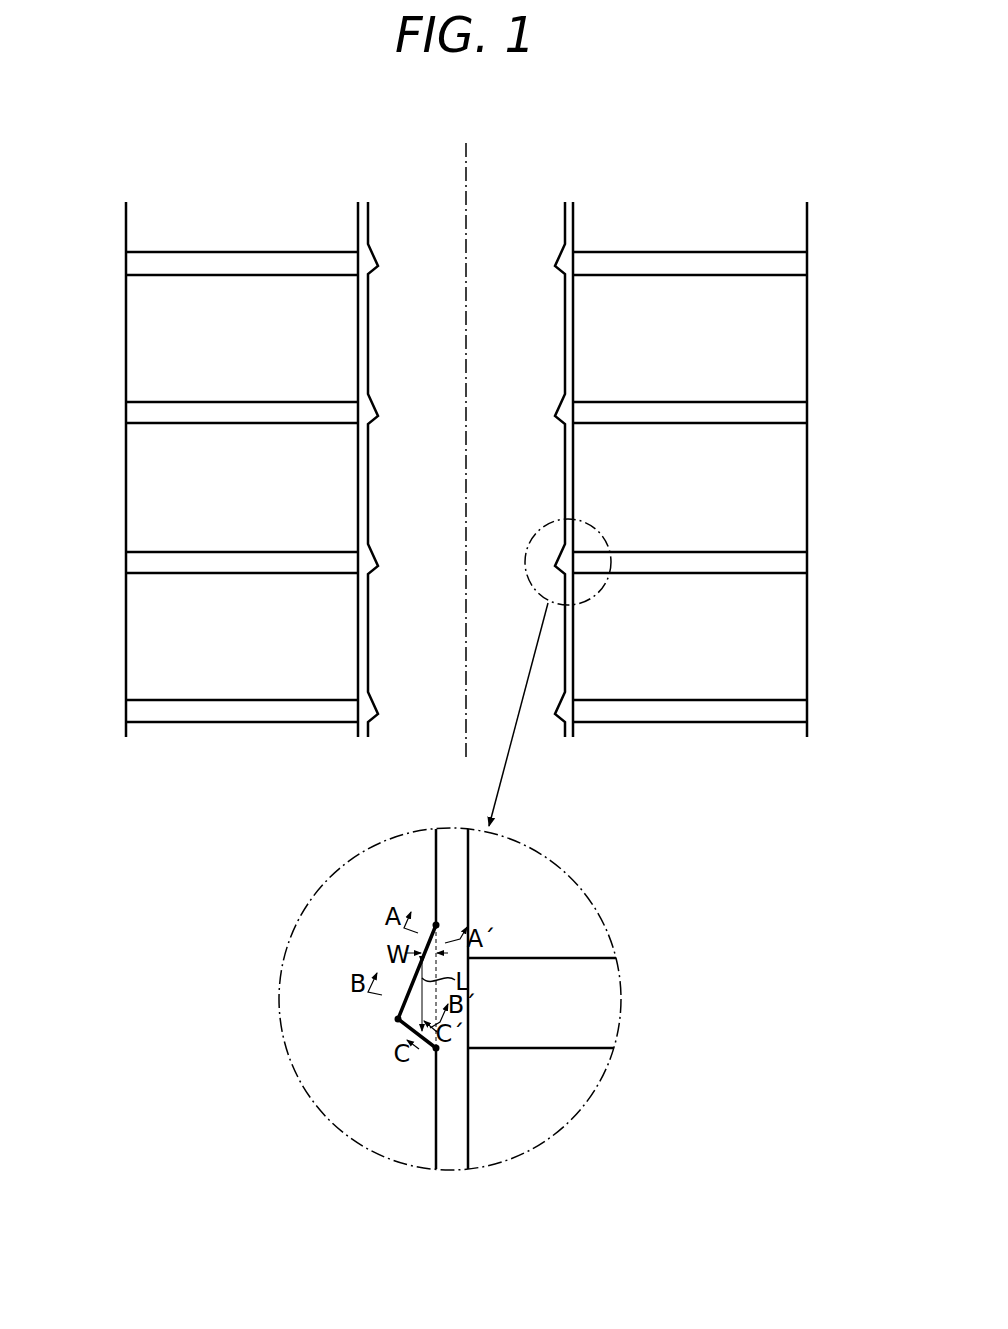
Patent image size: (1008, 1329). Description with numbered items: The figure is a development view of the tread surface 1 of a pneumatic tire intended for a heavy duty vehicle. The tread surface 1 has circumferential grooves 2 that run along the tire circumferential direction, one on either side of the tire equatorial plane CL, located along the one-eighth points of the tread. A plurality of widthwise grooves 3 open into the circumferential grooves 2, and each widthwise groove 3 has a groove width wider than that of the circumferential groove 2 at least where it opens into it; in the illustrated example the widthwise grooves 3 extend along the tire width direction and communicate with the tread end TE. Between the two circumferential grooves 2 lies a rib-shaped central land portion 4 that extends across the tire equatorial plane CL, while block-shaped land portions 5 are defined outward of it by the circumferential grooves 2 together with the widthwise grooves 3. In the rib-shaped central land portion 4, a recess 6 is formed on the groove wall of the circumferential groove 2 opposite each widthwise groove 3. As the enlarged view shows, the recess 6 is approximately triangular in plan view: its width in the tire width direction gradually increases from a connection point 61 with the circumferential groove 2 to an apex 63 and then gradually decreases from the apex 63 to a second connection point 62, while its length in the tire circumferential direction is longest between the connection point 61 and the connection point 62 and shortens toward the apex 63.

The tread surface 1 is at (780, 158).
The circumferential groove 2 is at (366, 200).
The widthwise groove 3 is at (240, 268).
The rib-shaped central land portion 4 is at (494, 212).
The block-shaped land portion 5 is at (243, 208).
The recess 6 is at (560, 265).
The connection point 61 is at (436, 923).
The connection point 62 is at (435, 1050).
The apex 63 is at (397, 1019).
The tread end TE is at (126, 336).
The tire equatorial plane CL is at (466, 436).